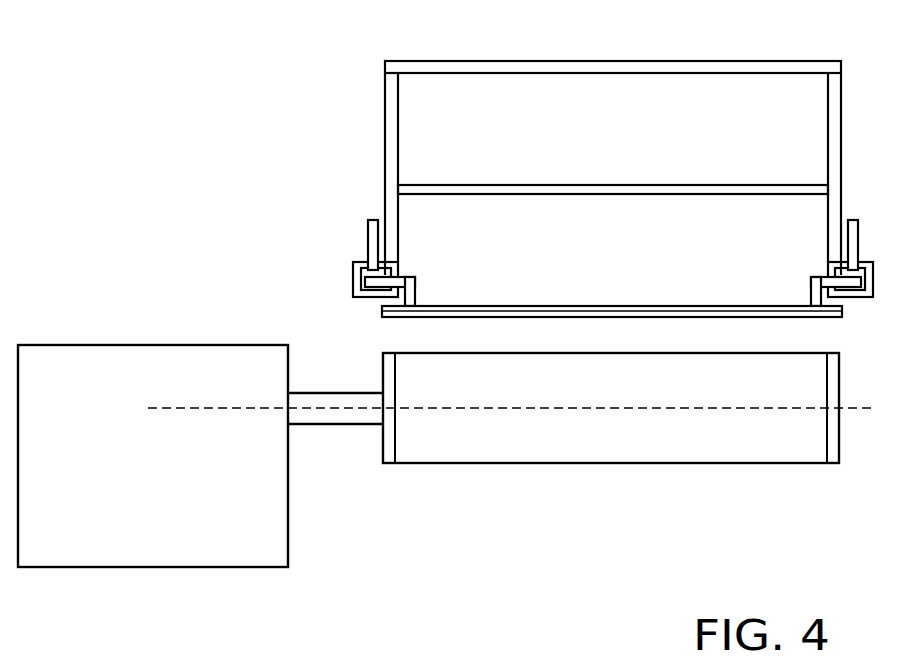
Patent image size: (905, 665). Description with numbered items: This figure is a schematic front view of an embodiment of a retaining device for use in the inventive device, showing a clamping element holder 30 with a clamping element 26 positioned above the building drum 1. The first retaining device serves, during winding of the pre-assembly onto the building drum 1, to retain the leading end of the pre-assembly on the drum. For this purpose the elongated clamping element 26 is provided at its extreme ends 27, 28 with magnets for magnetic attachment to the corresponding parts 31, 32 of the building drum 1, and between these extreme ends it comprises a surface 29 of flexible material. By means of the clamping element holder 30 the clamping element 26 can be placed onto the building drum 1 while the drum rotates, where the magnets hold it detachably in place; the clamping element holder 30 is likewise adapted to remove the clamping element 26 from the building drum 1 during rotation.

The building drum 1 is at (568, 463).
The clamping element 26 is at (540, 306).
The extreme end 27 is at (384, 312).
The extreme end 28 is at (843, 318).
The surface of flexible material 29 is at (638, 320).
The clamping element holder 30 is at (570, 61).
The part of the building drum 31 is at (390, 453).
The part of the building drum 32 is at (832, 463).